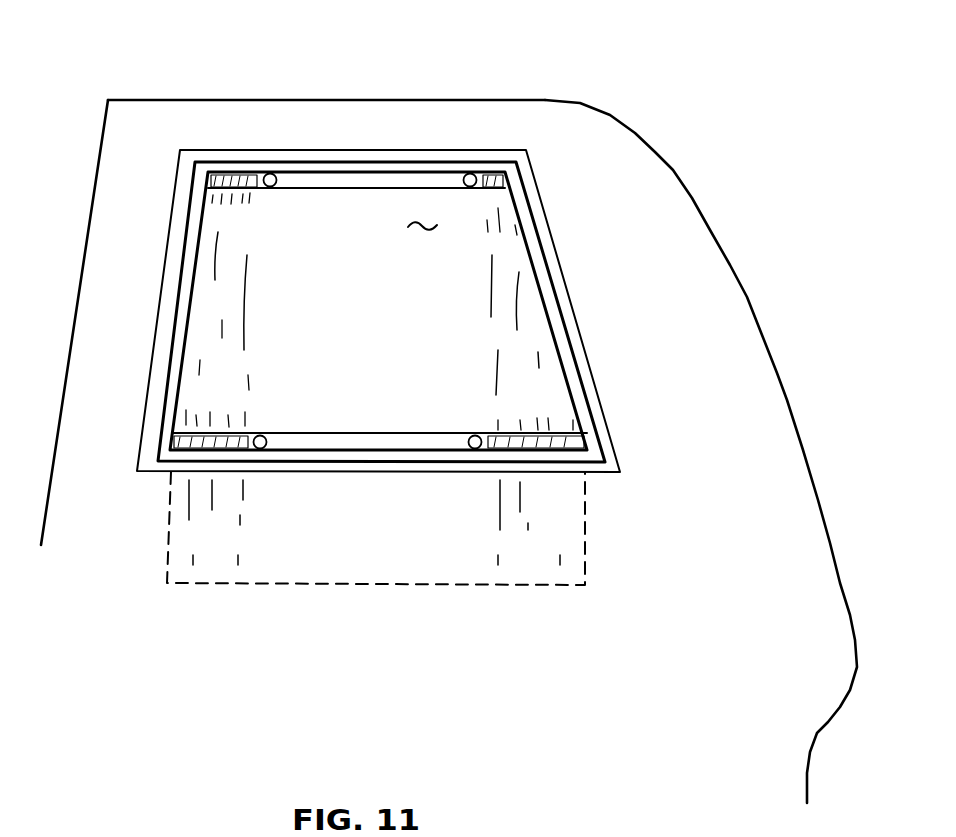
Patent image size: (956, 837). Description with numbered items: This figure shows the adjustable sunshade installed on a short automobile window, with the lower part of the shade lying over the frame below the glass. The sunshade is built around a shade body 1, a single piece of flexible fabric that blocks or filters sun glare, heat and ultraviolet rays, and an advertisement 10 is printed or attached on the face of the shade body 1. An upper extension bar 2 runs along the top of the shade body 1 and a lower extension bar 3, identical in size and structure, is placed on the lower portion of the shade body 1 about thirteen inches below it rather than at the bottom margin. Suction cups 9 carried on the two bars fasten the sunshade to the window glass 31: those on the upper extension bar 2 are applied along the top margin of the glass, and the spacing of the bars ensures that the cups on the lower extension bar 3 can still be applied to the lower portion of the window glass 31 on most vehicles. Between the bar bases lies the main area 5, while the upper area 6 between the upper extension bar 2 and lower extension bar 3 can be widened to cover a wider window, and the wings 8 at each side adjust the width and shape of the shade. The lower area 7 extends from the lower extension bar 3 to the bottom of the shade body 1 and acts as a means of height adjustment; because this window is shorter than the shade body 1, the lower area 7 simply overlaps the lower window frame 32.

The shade body 1 is at (434, 354).
The upper extension bar 2 is at (345, 180).
The lower extension bar 3 is at (325, 440).
The main area 5 is at (467, 245).
The upper area 6 is at (465, 286).
The lower area 7 is at (462, 525).
The wings 8 is at (525, 373).
The suction cups 9 is at (265, 175).
The advertisement 10 is at (300, 270).
The window glass 31 is at (423, 215).
The lower window frame 32 is at (403, 467).